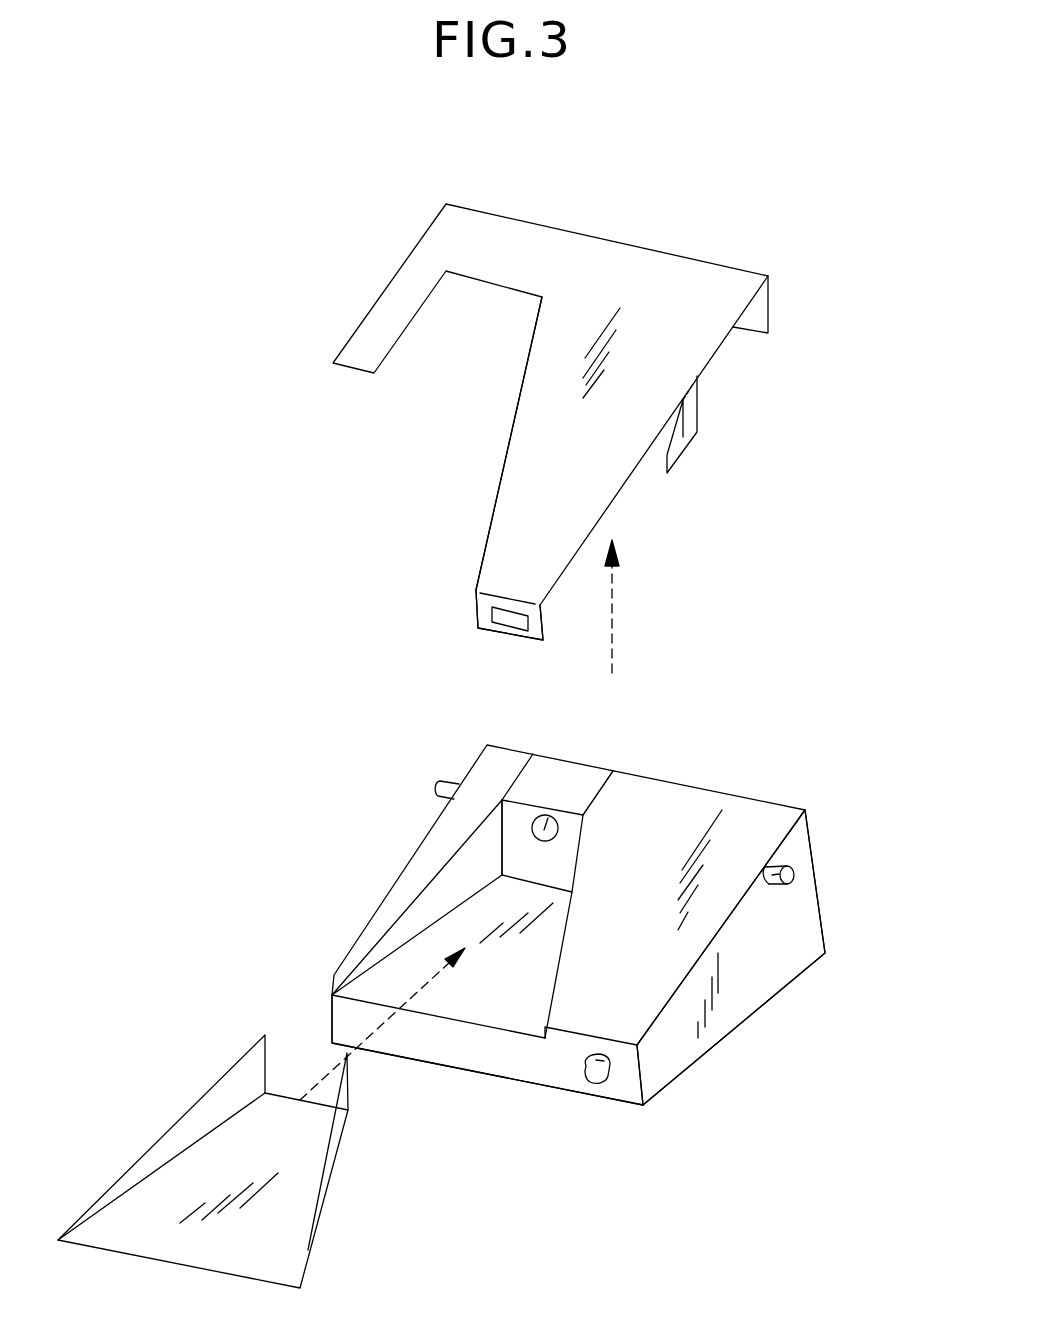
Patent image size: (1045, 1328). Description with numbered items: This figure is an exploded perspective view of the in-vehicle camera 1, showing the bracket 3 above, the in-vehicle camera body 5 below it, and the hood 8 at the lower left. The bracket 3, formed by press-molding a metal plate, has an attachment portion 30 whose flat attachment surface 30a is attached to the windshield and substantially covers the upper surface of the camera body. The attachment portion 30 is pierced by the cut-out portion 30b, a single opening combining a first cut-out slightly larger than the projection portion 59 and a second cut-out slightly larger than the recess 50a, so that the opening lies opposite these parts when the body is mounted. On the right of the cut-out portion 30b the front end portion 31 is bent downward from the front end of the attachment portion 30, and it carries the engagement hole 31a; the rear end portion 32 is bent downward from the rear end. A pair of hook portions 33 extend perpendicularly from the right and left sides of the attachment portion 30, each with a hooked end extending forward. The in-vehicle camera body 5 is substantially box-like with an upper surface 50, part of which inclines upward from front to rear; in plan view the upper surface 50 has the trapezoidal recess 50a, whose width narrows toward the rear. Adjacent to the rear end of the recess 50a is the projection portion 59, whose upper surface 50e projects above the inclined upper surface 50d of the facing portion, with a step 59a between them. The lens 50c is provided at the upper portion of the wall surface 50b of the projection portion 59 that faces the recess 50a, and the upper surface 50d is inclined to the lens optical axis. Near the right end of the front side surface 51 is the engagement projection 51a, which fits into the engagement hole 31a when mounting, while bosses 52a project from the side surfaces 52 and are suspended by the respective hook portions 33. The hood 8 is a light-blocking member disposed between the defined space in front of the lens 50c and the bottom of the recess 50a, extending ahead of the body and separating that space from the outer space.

The in-vehicle camera 1 is at (665, 153).
The bracket 3 is at (725, 265).
The attachment portion 30 is at (550, 402).
The attachment surface 30a is at (598, 252).
The cut-out portion 30b is at (502, 470).
The front end portion 31 is at (543, 622).
The engagement hole 31a is at (518, 620).
The rear end portion 32 is at (770, 299).
The hook portions 33 is at (698, 406).
The in-vehicle camera body 5 is at (810, 818).
The upper surface 50 is at (593, 898).
The recess 50a is at (572, 913).
The wall surface 50b is at (518, 818).
The lens 50c is at (550, 823).
The upper surface of the facing portion 50d is at (762, 810).
The upper surface of the projection portion 50e is at (591, 770).
The projection portion 59 is at (511, 843).
The step 59a is at (602, 800).
The front side surface 51 is at (455, 1047).
The engagement projection 51a is at (595, 1080).
The side surfaces 52 is at (740, 998).
The bosses 52a is at (437, 785).
The hood 8 is at (230, 1103).